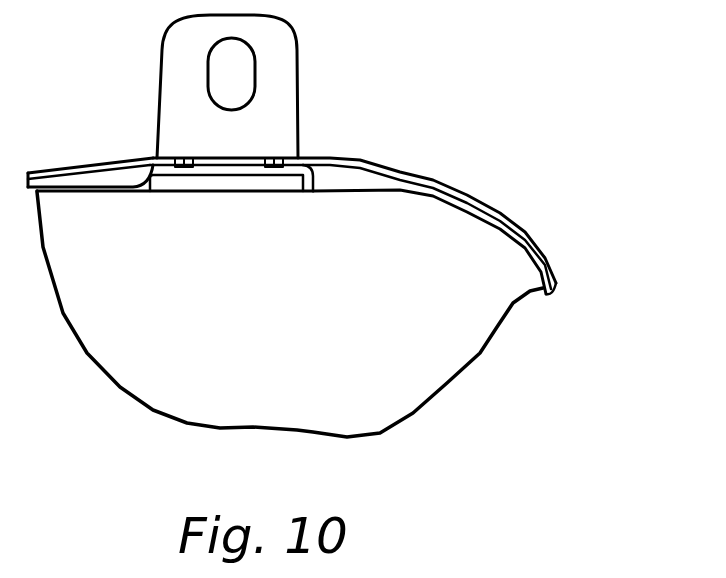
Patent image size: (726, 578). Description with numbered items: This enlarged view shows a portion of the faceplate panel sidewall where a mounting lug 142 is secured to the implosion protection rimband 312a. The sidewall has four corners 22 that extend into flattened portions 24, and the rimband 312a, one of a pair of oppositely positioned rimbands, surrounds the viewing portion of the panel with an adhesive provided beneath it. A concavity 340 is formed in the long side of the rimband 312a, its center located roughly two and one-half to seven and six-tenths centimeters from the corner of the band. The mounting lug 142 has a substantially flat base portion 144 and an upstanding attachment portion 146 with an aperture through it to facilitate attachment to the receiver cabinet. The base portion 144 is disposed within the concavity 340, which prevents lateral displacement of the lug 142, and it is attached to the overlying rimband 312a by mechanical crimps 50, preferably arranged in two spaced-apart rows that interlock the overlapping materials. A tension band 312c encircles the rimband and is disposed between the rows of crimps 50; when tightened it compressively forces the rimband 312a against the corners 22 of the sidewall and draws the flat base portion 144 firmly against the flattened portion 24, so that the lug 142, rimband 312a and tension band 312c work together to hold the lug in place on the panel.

The mounting lug 142 is at (427, 49).
The upstanding attachment portion 146 is at (282, 78).
The mechanical crimp 50 is at (183, 157).
The concavity 340 is at (315, 190).
The tension band 312c is at (526, 224).
The rimband 312a is at (556, 291).
The base portion 144 is at (231, 183).
The flattened portion 24 is at (262, 193).
The corner 22 is at (508, 232).